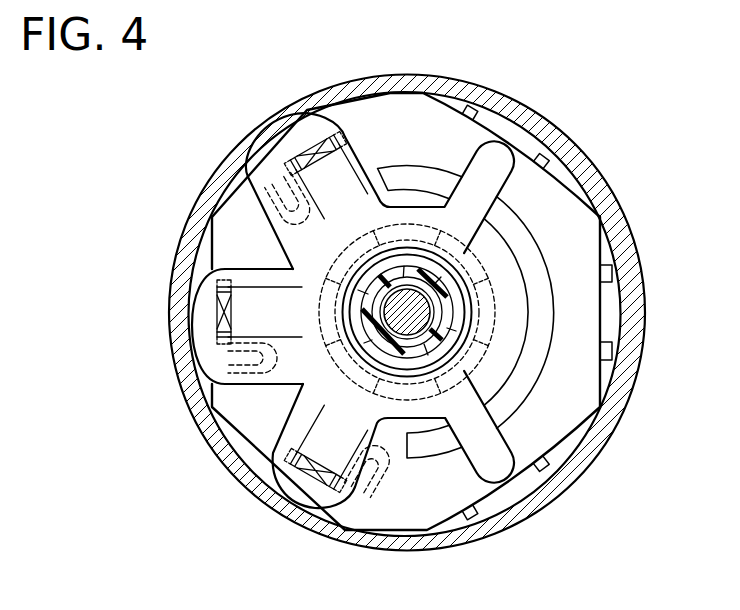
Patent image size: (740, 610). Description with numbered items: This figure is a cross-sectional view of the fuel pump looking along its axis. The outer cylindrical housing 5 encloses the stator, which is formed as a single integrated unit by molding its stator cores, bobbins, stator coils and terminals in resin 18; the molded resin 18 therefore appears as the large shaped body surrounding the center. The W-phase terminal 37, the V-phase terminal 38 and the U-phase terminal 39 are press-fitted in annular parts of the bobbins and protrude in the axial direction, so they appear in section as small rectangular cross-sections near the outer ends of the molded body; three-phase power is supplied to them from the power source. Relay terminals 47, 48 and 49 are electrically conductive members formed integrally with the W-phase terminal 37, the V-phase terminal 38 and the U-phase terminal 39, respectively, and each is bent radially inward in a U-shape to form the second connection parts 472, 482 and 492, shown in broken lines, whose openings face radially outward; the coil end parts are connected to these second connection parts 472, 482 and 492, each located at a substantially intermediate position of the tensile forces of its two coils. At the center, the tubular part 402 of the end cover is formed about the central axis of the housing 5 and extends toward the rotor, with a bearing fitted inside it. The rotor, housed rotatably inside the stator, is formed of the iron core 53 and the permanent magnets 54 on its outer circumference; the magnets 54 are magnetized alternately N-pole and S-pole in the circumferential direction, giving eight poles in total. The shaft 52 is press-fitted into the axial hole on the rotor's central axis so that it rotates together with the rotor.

The housing 5 is at (488, 88).
The resin 18 is at (440, 140).
The W-phase terminal 37 is at (300, 478).
The V-phase terminal 38 is at (216, 311).
The U-phase terminal 39 is at (303, 150).
The relay terminal 47 is at (370, 498).
The relay terminal 48 is at (225, 356).
The relay terminal 49 is at (275, 205).
The second connection part 472 is at (340, 488).
The second connection part 482 is at (235, 368).
The second connection part 492 is at (290, 186).
The tubular part 402 is at (440, 286).
The shaft 52 is at (418, 311).
The iron core 53 is at (448, 337).
The permanent magnets 54 is at (487, 356).